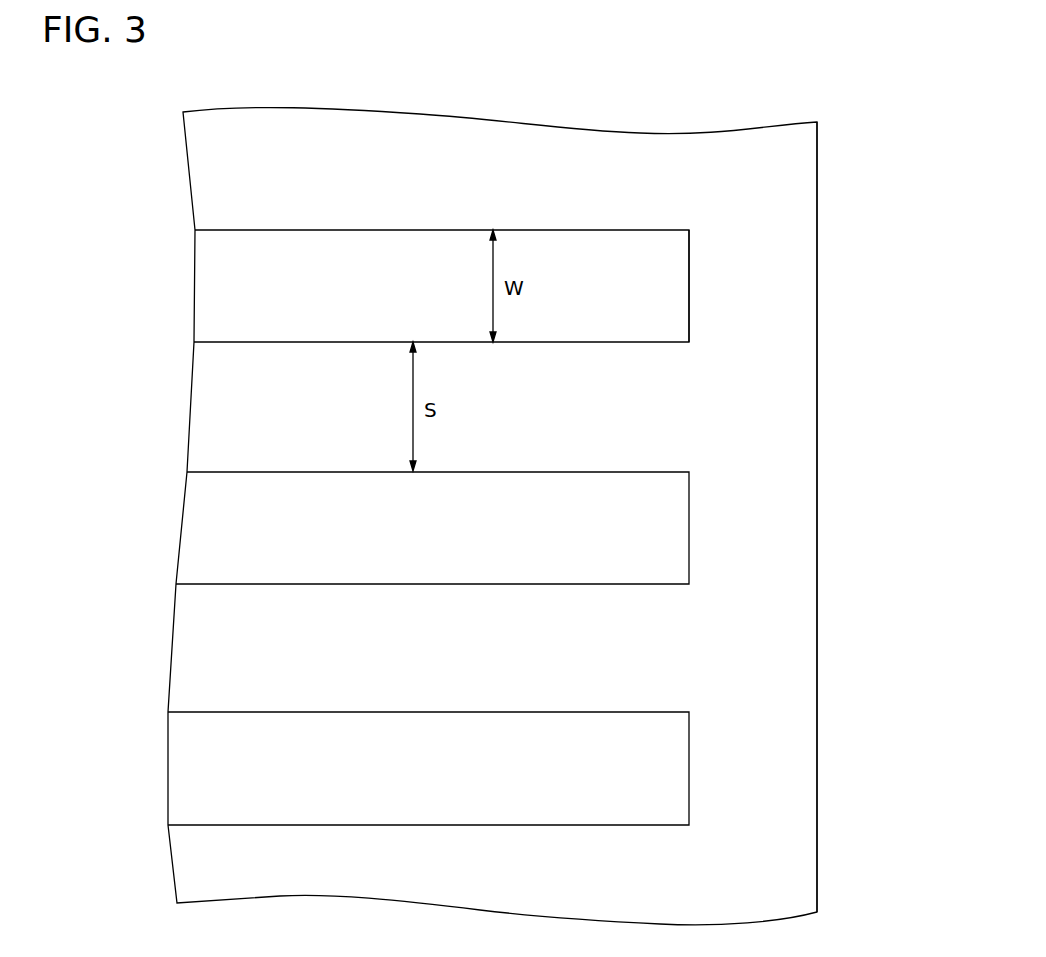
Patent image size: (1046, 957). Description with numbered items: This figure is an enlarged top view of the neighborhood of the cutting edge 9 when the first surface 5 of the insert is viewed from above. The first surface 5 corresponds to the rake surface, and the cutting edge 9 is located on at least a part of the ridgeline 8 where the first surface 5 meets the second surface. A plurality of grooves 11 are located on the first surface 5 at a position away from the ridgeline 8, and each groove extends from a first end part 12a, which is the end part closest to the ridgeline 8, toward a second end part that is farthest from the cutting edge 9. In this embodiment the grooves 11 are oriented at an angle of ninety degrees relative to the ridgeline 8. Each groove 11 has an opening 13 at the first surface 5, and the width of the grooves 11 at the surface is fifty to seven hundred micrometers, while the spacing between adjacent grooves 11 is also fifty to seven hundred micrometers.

The first surface 5 is at (470, 173).
The grooves 11 is at (340, 285).
The opening 13 is at (417, 280).
The first end part 12a is at (689, 285).
The cutting edge 9 is at (817, 377).
The ridgeline 8 is at (816, 519).